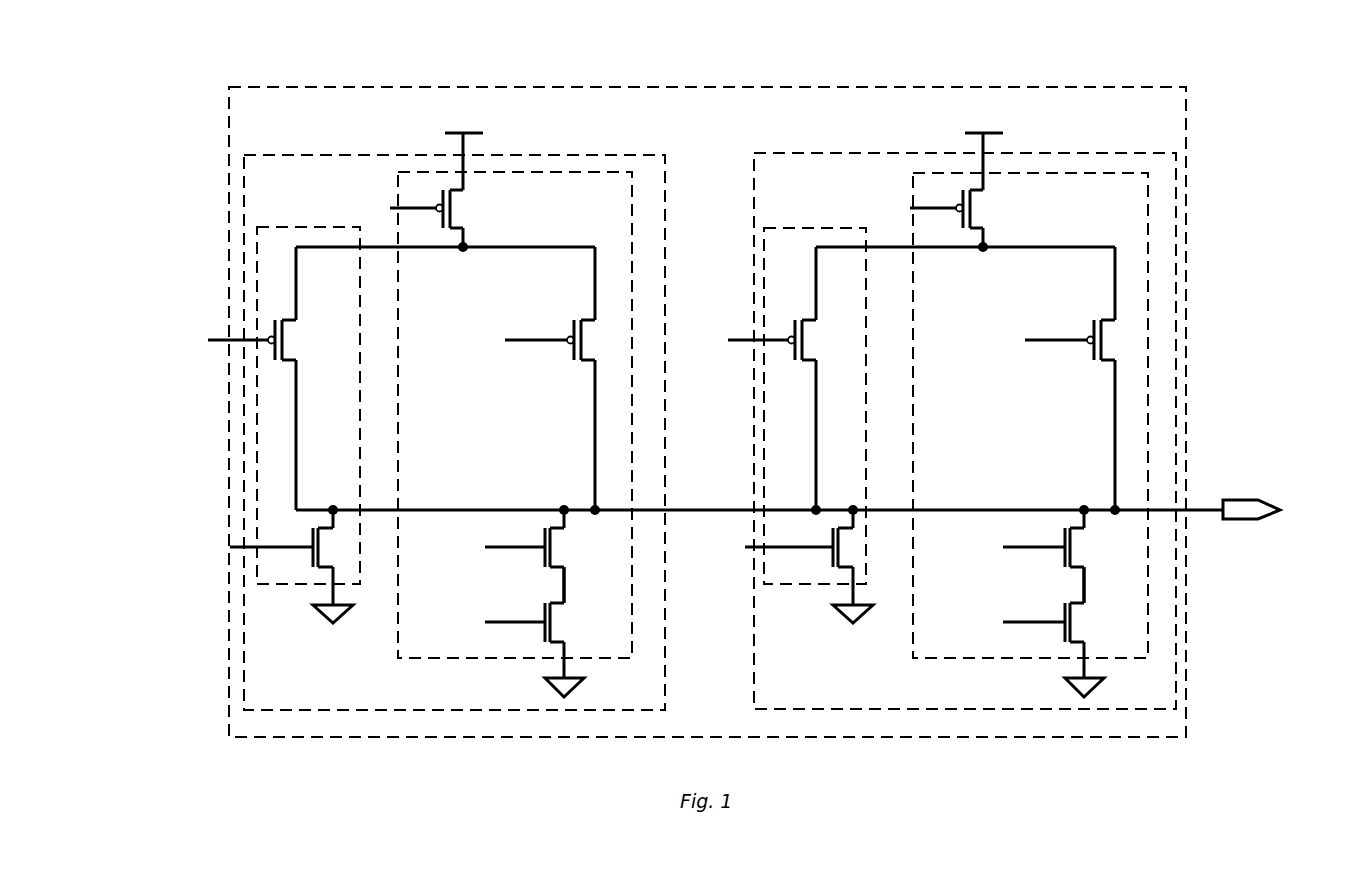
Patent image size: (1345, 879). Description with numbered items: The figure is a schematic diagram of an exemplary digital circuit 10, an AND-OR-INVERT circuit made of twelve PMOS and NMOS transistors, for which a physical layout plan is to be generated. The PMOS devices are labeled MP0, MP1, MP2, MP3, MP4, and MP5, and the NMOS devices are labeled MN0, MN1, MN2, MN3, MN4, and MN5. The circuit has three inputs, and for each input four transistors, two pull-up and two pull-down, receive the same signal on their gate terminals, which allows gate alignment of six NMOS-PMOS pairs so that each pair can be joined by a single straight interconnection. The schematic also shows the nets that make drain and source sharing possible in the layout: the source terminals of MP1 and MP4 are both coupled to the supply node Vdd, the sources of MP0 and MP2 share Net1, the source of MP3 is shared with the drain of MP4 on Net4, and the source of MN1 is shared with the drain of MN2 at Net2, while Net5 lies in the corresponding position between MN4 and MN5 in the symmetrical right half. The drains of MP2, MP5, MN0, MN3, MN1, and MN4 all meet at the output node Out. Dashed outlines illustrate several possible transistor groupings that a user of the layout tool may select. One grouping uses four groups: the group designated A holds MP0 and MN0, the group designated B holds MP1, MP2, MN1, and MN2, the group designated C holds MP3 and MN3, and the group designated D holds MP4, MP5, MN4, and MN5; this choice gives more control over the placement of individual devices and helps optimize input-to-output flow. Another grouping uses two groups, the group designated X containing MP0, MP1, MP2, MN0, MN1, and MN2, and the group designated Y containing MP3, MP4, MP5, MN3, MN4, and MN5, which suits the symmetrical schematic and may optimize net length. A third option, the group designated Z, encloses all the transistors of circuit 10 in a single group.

The circuit 10 is at (715, 60).
The Group Z is at (930, 87).
The Group X is at (655, 155).
The Group Y is at (1152, 153).
The Group A is at (258, 585).
The Group B is at (398, 660).
The Group C is at (764, 586).
The Group D is at (913, 660).
The Vdd node Vdd is at (725, 147).
The Out node Out is at (812, 510).
The PMOS transistor MP0 is at (270, 378).
The PMOS transistor MP1 is at (447, 218).
The PMOS transistor MP2 is at (571, 378).
The PMOS transistor MP3 is at (790, 378).
The PMOS transistor MP4 is at (967, 218).
The PMOS transistor MP5 is at (1091, 378).
The NMOS transistor MN0 is at (305, 566).
The NMOS transistor MN1 is at (549, 556).
The NMOS transistor MN2 is at (549, 650).
The NMOS transistor MN3 is at (823, 566).
The NMOS transistor MN4 is at (1068, 556).
The NMOS transistor MN5 is at (1068, 650).
The element Net1 is at (445, 233).
The element Net2 is at (534, 585).
The element Net4 is at (965, 233).
The element Net5 is at (1059, 585).